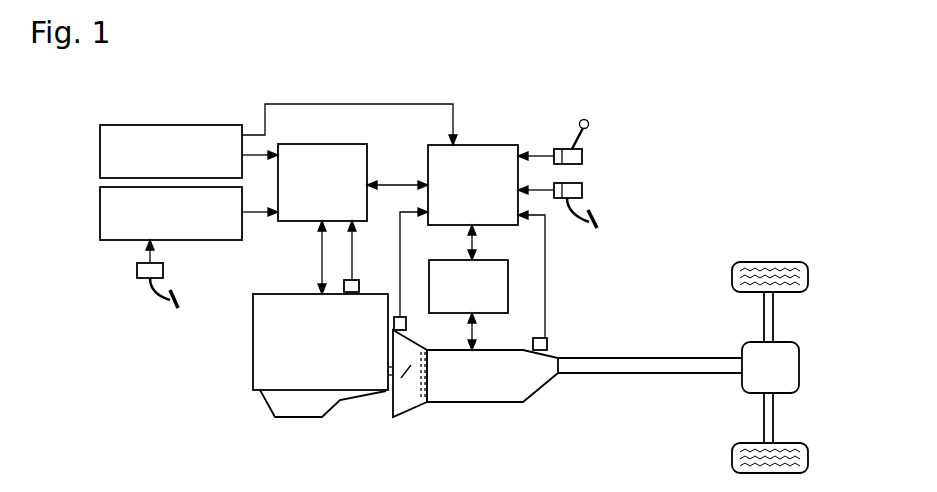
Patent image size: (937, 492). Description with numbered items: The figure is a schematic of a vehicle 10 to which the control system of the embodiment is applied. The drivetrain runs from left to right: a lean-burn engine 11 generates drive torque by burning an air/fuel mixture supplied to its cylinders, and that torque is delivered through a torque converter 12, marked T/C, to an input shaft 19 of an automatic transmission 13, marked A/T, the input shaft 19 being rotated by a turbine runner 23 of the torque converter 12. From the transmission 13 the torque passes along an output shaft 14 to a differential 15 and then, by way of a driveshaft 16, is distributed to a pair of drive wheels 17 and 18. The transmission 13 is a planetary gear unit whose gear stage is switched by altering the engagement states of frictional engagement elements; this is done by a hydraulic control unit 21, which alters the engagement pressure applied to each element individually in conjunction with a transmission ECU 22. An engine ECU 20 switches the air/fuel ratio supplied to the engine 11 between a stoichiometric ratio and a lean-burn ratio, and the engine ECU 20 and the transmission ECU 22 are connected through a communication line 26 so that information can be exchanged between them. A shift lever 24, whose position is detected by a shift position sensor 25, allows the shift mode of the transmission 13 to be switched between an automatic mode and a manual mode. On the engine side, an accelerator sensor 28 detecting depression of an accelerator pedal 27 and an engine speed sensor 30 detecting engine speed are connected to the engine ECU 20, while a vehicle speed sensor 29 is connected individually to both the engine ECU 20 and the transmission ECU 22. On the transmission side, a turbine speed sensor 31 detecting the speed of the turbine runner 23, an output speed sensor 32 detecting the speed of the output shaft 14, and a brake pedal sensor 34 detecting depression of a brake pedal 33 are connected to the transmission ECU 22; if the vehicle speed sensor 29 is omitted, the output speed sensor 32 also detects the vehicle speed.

The vehicle 10 is at (706, 120).
The lean-burn engine 11 is at (253, 360).
The torque converter 12 is at (398, 417).
The automatic transmission 13 is at (532, 396).
The output shaft 14 is at (650, 357).
The differential 15 is at (788, 370).
The driveshaft 16 is at (773, 316).
The drive wheel 17 is at (780, 262).
The drive wheel 18 is at (808, 463).
The input shaft 19 is at (427, 367).
The engine ECU 20 is at (296, 223).
The hydraulic control unit 21 is at (488, 260).
The transmission ECU 22 is at (488, 145).
The turbine runner 23 is at (427, 400).
The shift lever 24 is at (589, 124).
The shift position sensor 25 is at (565, 148).
The communication line 26 is at (395, 182).
The accelerator pedal 27 is at (160, 300).
The accelerator sensor 28 is at (100, 206).
The vehicle speed sensor 29 is at (100, 142).
The engine speed sensor 30 is at (360, 282).
The turbine speed sensor 31 is at (401, 315).
The output speed sensor 32 is at (546, 338).
The brake pedal 33 is at (598, 217).
The brake pedal sensor 34 is at (568, 183).